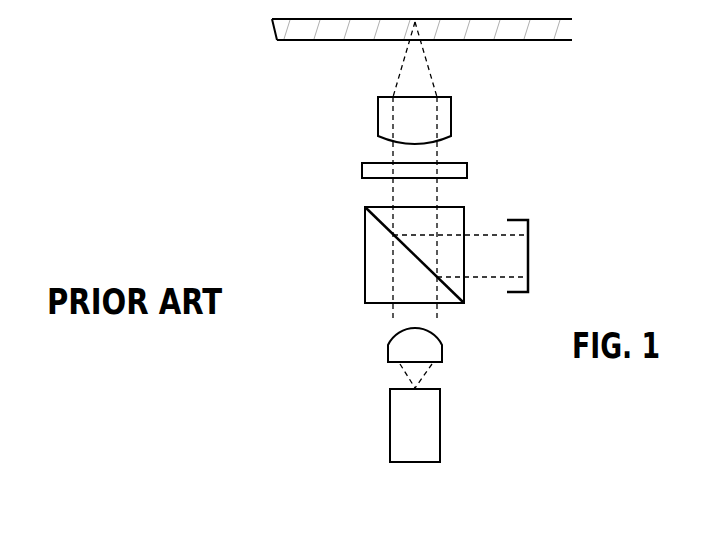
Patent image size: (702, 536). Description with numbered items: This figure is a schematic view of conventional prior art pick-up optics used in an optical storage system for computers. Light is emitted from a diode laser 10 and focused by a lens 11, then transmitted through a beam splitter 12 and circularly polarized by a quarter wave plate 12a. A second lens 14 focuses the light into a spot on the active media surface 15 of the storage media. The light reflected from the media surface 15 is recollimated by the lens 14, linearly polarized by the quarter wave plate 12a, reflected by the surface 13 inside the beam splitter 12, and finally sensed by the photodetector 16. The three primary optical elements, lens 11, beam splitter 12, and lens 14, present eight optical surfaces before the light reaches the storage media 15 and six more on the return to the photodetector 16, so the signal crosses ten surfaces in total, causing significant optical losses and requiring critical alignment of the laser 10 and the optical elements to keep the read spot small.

The diode laser 10 is at (392, 409).
The lens 11 is at (388, 345).
The beam splitter 12 is at (365, 253).
The quarter wave plate 12a is at (468, 172).
The surface 13 is at (370, 227).
The lens 14 is at (378, 115).
The active media surface 15 is at (508, 41).
The photodetector 16 is at (530, 231).